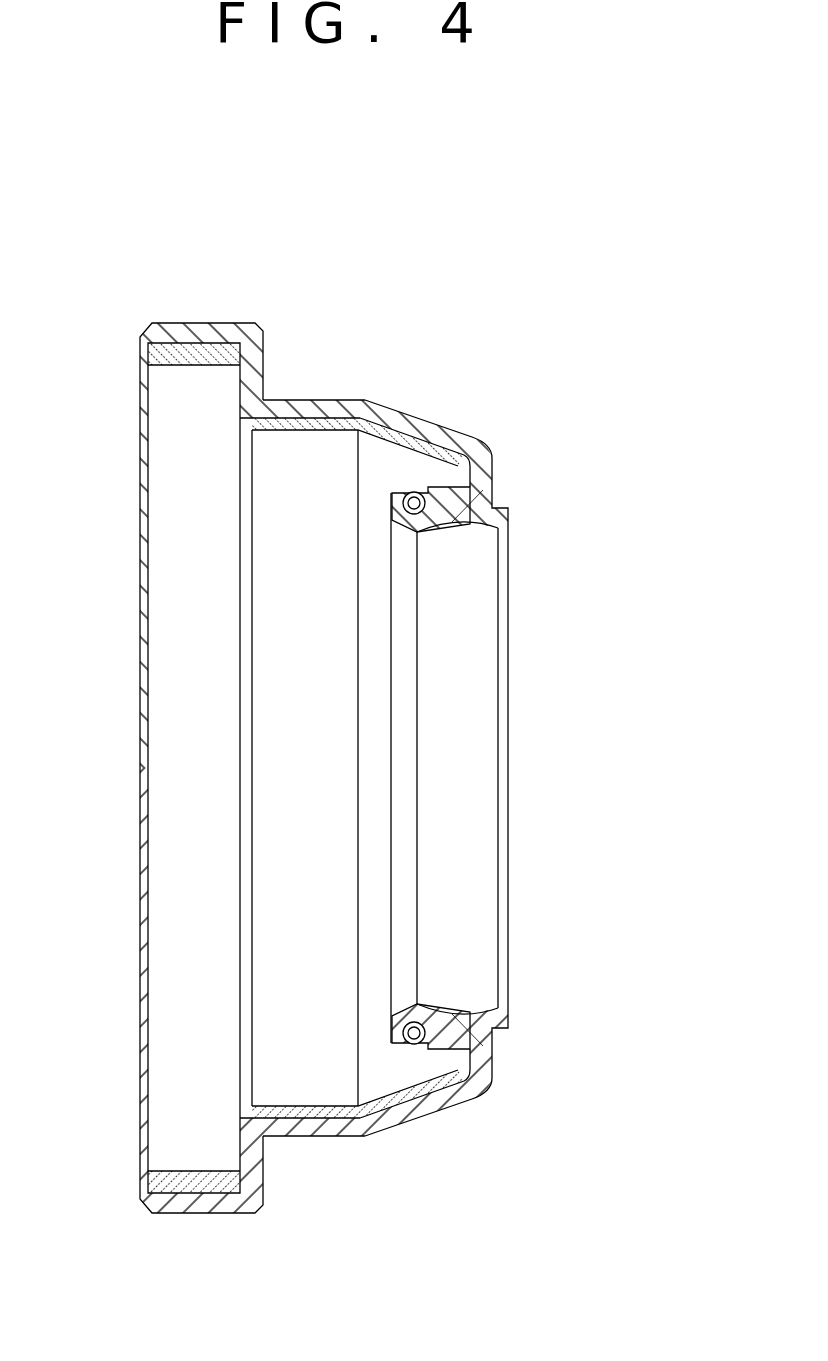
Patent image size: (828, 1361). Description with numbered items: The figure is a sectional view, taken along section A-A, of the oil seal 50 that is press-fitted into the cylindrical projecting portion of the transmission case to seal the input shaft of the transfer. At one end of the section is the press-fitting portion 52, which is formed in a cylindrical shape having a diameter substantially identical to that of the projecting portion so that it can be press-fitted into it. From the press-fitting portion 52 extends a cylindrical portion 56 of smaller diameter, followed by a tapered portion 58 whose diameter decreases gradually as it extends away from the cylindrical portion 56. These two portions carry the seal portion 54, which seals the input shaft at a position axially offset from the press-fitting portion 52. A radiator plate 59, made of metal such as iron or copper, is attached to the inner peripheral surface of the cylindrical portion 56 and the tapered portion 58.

The oil seal 50 is at (379, 834).
The press-fitting portion 52 is at (195, 1216).
The seal portion 54 is at (500, 998).
The cylindrical portion 56 is at (317, 1140).
The tapered portion 58 is at (430, 1128).
The radiator plate 59 is at (290, 1103).